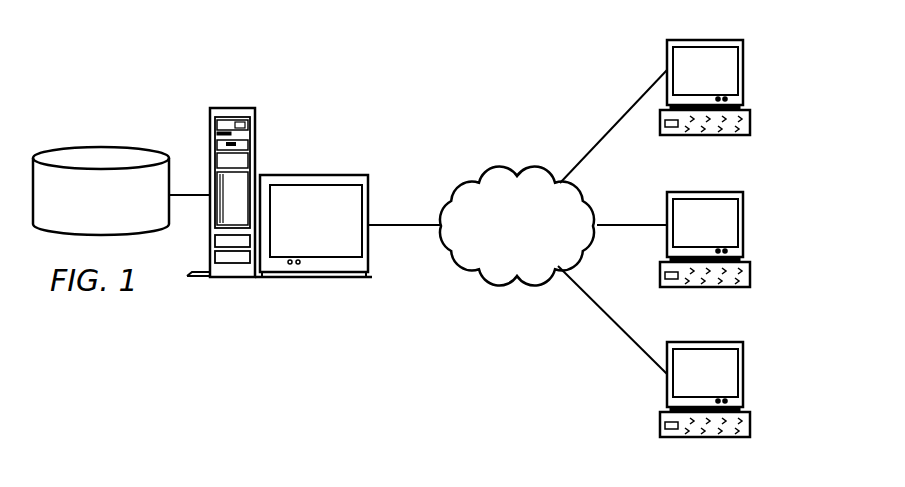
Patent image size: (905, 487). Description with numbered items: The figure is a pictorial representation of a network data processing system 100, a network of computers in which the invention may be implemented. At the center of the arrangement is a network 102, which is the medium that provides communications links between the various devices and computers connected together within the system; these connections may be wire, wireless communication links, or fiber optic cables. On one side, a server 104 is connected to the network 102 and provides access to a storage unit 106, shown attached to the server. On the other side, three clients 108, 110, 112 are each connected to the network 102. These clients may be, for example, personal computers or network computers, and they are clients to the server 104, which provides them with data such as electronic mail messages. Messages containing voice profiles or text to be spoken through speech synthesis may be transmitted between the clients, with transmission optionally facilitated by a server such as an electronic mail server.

The network data processing system 100 is at (293, 71).
The network 102 is at (490, 171).
The server 104 is at (314, 175).
The storage unit 106 is at (99, 151).
The client 108 is at (743, 72).
The client 110 is at (743, 224).
The client 112 is at (743, 375).